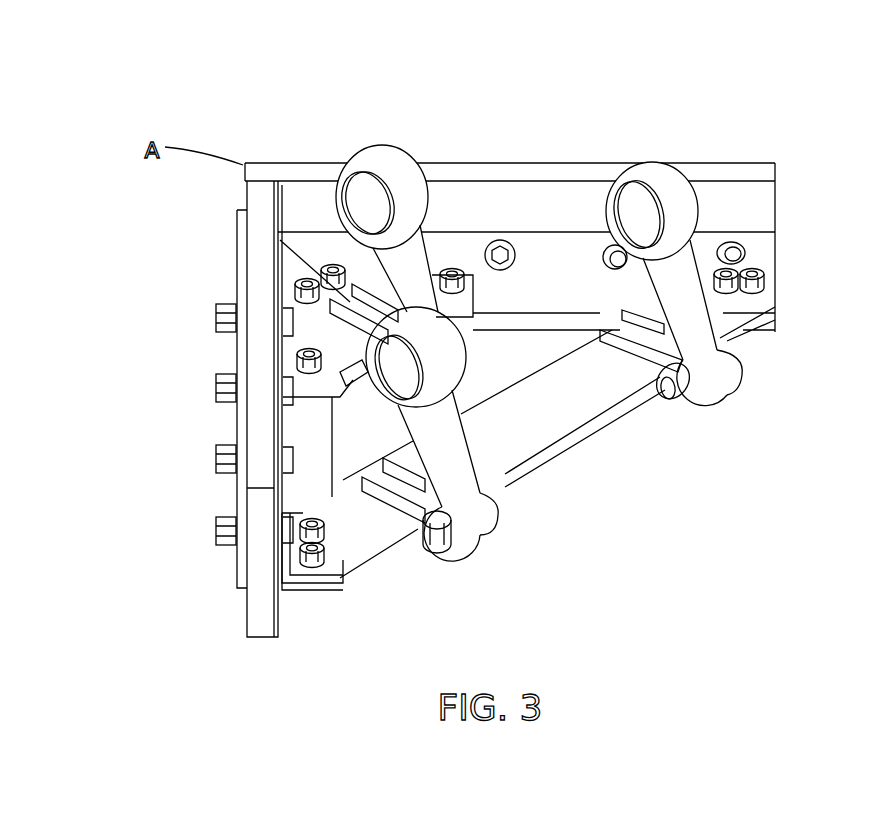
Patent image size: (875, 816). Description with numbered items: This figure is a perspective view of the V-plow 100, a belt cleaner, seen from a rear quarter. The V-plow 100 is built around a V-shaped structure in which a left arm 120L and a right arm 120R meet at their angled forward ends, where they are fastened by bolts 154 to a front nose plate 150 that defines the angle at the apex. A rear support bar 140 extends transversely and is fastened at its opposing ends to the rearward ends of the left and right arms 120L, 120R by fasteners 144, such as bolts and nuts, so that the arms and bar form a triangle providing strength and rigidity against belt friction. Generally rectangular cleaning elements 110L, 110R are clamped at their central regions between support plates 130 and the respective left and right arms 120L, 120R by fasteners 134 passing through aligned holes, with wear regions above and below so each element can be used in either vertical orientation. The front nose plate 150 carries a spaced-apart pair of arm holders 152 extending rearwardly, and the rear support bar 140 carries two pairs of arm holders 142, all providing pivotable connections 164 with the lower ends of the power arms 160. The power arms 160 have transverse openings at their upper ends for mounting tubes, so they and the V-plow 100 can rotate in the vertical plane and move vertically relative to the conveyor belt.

The V-plow 100 is at (661, 86).
The left cleaning element 110L is at (262, 598).
The right cleaning element 110R is at (750, 177).
The left arm 120L is at (305, 410).
The right arm 120R is at (548, 252).
The support plate 130 is at (237, 275).
The fasteners 134 is at (224, 470).
The rear support bar 140 is at (575, 435).
The arm holders 142 is at (742, 372).
The fasteners 144 is at (322, 583).
The front nose plate 150 is at (352, 380).
The arm holders 152 is at (462, 364).
The bolts 154 is at (326, 262).
The power arms 160 is at (390, 165).
The pivotable connections 164 is at (678, 405).